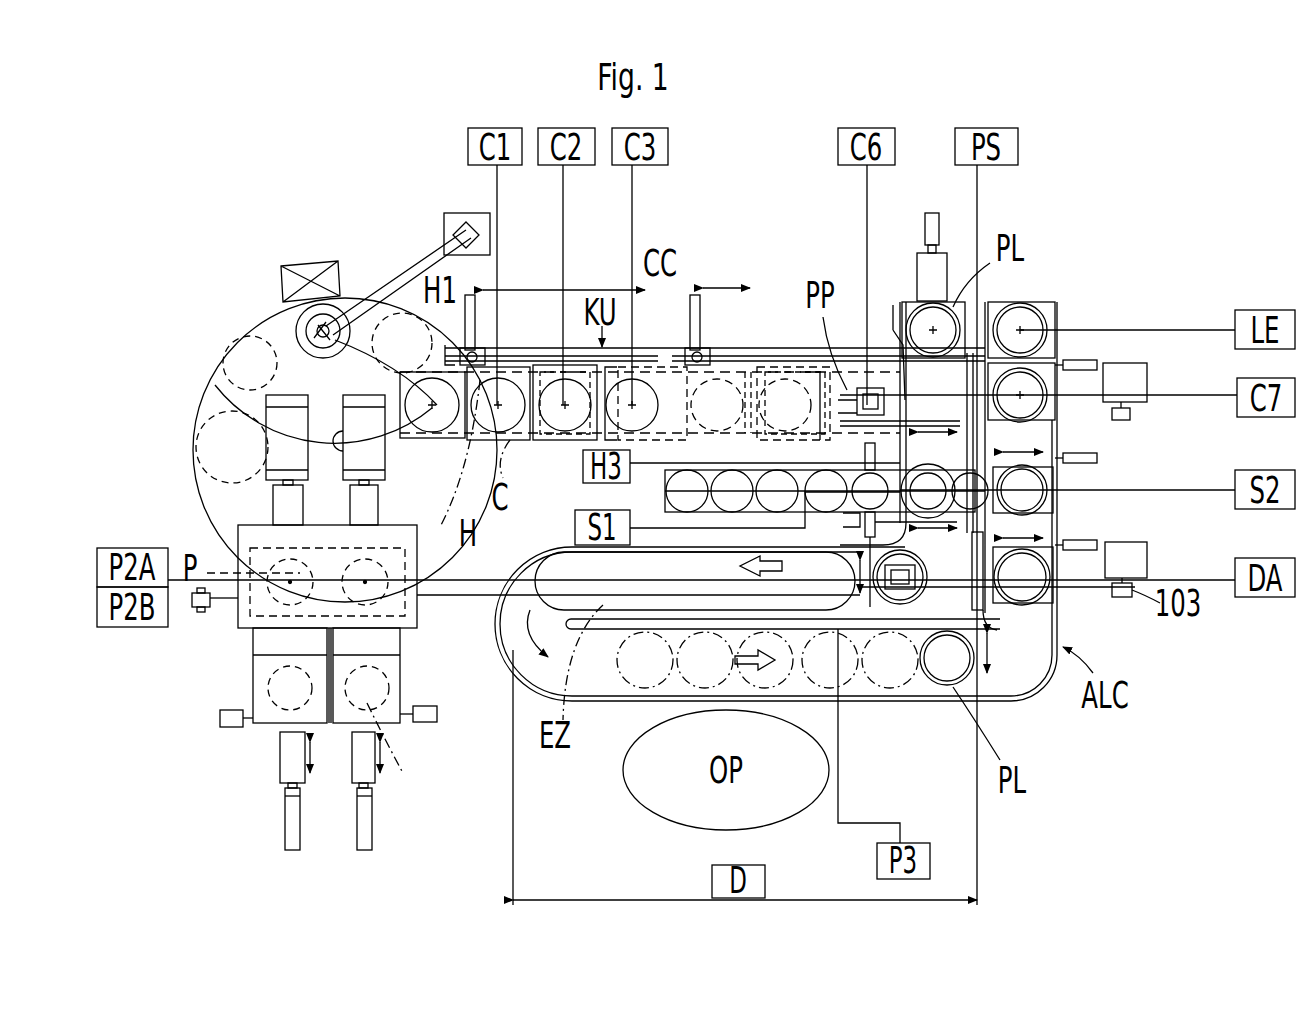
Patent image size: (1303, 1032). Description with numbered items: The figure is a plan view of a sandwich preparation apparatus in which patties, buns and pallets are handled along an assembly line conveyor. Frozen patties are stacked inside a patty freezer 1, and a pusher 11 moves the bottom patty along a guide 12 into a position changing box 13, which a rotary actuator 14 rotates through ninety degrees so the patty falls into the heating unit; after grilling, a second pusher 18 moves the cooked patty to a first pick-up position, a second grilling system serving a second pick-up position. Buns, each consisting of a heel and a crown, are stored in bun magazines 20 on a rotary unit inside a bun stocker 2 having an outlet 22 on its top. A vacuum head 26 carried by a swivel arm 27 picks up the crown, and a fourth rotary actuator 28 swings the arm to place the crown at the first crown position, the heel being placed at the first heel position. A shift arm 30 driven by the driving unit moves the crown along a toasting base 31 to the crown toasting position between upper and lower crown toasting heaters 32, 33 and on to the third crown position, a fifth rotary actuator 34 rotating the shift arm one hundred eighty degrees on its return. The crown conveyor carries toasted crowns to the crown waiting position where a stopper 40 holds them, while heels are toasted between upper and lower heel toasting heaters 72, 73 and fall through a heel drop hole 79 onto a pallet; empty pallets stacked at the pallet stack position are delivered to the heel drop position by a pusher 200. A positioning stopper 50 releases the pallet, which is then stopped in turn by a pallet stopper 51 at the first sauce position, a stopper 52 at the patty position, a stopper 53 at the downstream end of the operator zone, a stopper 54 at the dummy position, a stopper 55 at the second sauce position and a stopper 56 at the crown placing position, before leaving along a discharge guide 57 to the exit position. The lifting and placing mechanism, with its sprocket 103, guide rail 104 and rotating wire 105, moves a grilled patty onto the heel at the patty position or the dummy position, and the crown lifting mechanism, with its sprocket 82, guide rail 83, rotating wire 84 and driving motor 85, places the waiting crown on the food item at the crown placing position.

The patty freezer 1 is at (236, 546).
The bun stocker 2 is at (200, 336).
The pusher 11 is at (357, 423).
The guide 12 is at (253, 652).
The position changing box 13 is at (253, 690).
The rotary actuator 14 is at (228, 727).
The second pusher 18 is at (278, 826).
The bun magazine 20 is at (240, 337).
The outlet 22 is at (282, 300).
The vacuum head 26 is at (348, 300).
The swivel arm 27 is at (420, 255).
The fourth rotary actuator 28 is at (478, 220).
The shift arm 30 is at (470, 330).
The toasting base 31 is at (523, 425).
The upper crown toasting heater 32 is at (547, 362).
The lower crown toasting heater 33 is at (585, 372).
The fifth rotary actuator 34 is at (480, 350).
The stopper 40 is at (863, 397).
The positioning stopper 50 is at (1057, 443).
The pallet stopper 51 is at (975, 500).
The stopper 52 is at (873, 600).
The stopper 53 is at (980, 675).
The stopper 54 is at (1057, 527).
The stopper 55 is at (1060, 470).
The stopper 56 is at (1057, 347).
The discharge guide 57 is at (1047, 307).
The upper heel toasting heater 72 is at (765, 365).
The lower heel toasting heater 73 is at (768, 372).
The heel drop hole 79 is at (1010, 300).
The sprocket 82 is at (815, 372).
The guide rail 83 is at (893, 330).
The rotating wire 84 is at (1097, 417).
The driving motor 85 is at (1140, 363).
The sprocket 103 is at (195, 612).
The guide rail 104 is at (452, 597).
The rotating wire 105 is at (1083, 590).
The pusher 200 is at (947, 270).